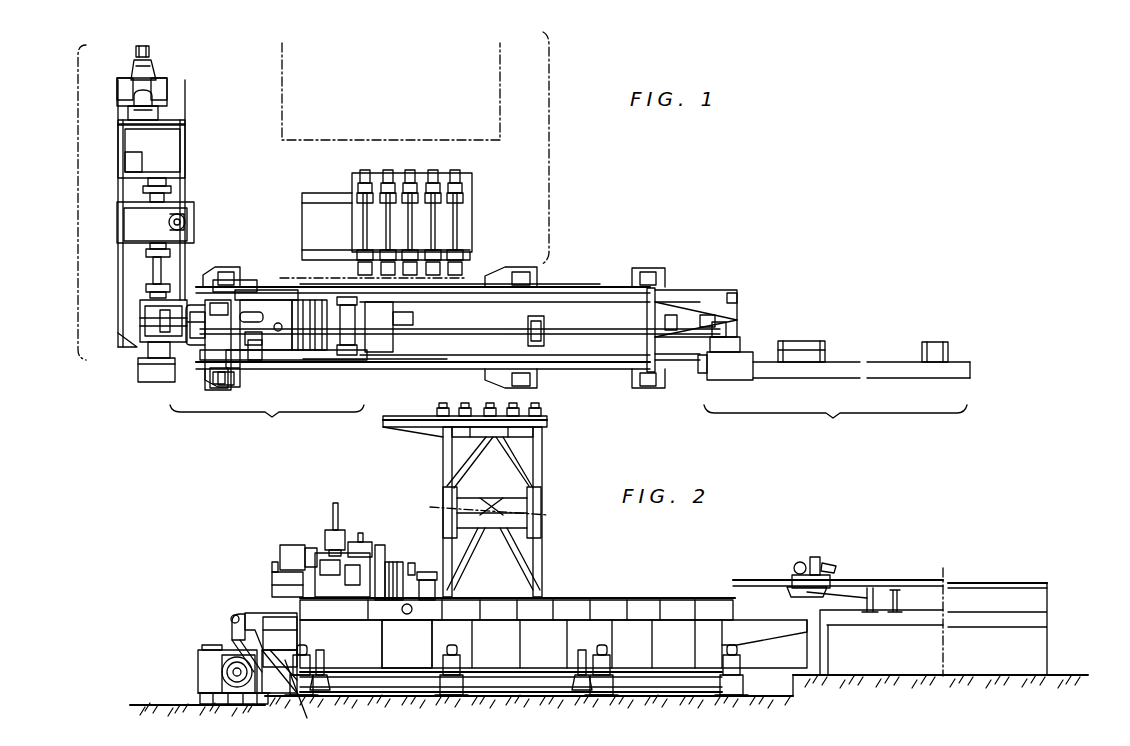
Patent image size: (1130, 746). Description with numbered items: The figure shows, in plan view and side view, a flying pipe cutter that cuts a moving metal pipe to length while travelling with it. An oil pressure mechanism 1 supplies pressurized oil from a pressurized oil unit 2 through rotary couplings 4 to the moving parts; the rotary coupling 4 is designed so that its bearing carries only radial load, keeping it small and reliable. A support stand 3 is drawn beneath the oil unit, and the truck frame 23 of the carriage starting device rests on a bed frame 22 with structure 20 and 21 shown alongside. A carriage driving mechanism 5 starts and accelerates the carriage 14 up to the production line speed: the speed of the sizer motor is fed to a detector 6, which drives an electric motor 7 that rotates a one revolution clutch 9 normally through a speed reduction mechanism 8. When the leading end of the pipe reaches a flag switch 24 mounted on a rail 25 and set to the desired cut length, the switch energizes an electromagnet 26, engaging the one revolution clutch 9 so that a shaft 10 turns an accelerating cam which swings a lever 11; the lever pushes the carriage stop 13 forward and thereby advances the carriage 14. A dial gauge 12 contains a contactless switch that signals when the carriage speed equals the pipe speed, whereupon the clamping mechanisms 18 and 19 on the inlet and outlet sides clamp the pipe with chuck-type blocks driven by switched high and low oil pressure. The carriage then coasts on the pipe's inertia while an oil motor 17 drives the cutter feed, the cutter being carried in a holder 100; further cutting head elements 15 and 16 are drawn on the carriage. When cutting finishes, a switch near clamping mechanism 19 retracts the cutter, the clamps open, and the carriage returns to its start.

In FIG. 1, the oil pressure mechanism 1 is at (549, 137).
In FIG. 1, the pressurized oil unit 2 is at (418, 97).
In FIG. 1, the support stand 3 is at (462, 218).
In FIG. 2, the support stand 3 is at (541, 450).
In FIG. 1, the rotary coupling 4 is at (462, 267).
In FIG. 1, the carriage driving mechanism 5 is at (70, 196).
In FIG. 1, the detector 6 is at (150, 52).
In FIG. 1, the electric motor 7 is at (158, 72).
In FIG. 1, the speed reduction mechanism 8 is at (132, 138).
In FIG. 2, the speed reduction mechanism 8 is at (208, 662).
In FIG. 1, the one revolution clutch 9 is at (130, 218).
In FIG. 1, the shaft 10 is at (154, 272).
In FIG. 1, the lever 11 is at (148, 321).
In FIG. 2, the lever 11 is at (237, 637).
In FIG. 1, the dial gauge 12 is at (139, 366).
In FIG. 2, the dial gauge 12 is at (198, 688).
In FIG. 1, the carriage stop 13 is at (204, 351).
In FIG. 2, the carriage stop 13 is at (247, 611).
In FIG. 1, the carriage 14 is at (267, 425).
In FIG. 1, the tool head 15 is at (298, 343).
In FIG. 2, the tool head 15 is at (378, 545).
In FIG. 1, the clamp 16 is at (258, 360).
In FIG. 2, the clamp 16 is at (333, 533).
In FIG. 2, the oil motor 17 is at (290, 552).
In FIG. 1, the clamping mechanism 18 is at (232, 365).
In FIG. 2, the clamping mechanism 18 is at (273, 583).
In FIG. 1, the clamping mechanism 19 is at (343, 347).
In FIG. 2, the clamping mechanism 19 is at (427, 574).
In FIG. 1, the feed rod 20 is at (514, 328).
In FIG. 1, the tailstock assembly 21 is at (835, 425).
In FIG. 2, the machine bed frame 22 is at (407, 644).
In FIG. 1, the truck frame 23 is at (452, 363).
In FIG. 2, the truck frame 23 is at (553, 628).
In FIG. 1, the flag switch 24 is at (733, 372).
In FIG. 2, the flag switch 24 is at (814, 554).
In FIG. 1, the rail 25 is at (797, 376).
In FIG. 2, the rail 25 is at (863, 576).
In FIG. 1, the electromagnet 26 is at (186, 219).
In FIG. 2, the electromagnet 26 is at (301, 700).
In FIG. 1, the holder 100 is at (317, 343).
In FIG. 2, the holder 100 is at (398, 562).